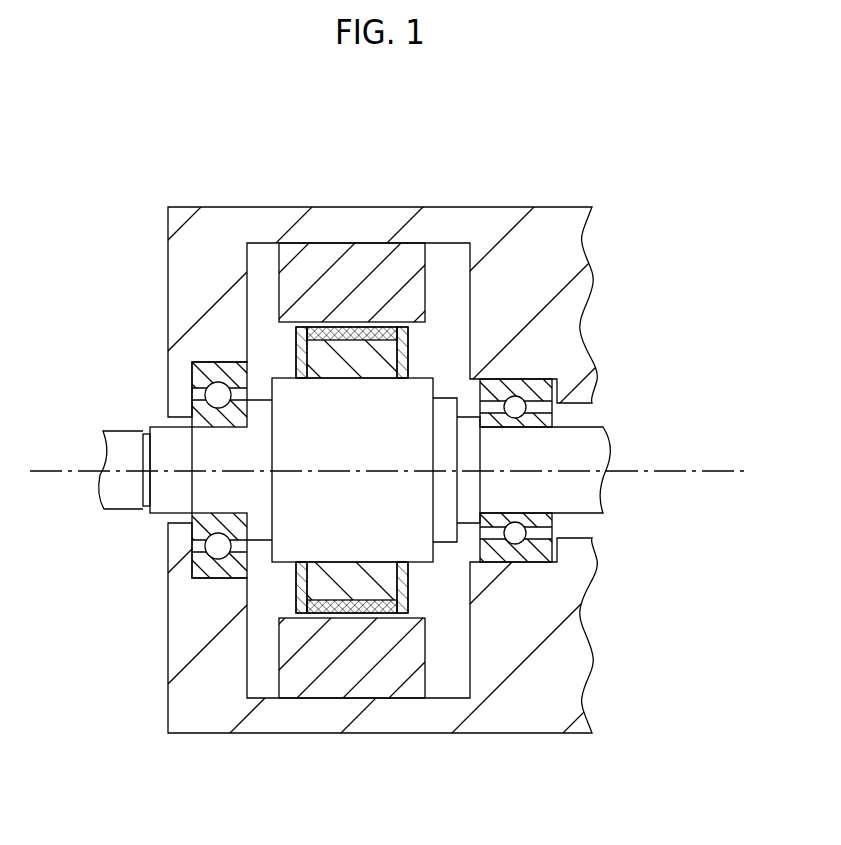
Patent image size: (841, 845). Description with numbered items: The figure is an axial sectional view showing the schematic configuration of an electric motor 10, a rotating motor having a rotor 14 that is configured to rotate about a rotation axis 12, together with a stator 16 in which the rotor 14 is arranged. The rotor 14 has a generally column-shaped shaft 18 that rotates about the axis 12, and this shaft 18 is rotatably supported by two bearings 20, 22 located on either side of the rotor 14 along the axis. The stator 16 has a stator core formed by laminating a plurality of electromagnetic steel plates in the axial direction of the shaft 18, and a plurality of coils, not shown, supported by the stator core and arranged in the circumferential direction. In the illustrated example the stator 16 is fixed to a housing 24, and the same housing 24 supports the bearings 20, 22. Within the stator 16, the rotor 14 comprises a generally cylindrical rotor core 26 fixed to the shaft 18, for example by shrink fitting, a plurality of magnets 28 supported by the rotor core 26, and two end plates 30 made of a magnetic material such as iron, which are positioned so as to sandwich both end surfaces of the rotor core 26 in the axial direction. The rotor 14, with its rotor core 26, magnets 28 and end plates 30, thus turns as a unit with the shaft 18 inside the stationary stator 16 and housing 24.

The electric motor 10 is at (549, 207).
The rotation axis 12 is at (663, 471).
The rotor 14 is at (273, 570).
The stator 16 is at (371, 265).
The shaft 18 is at (170, 442).
The bearing 20 is at (217, 363).
The bearing 22 is at (530, 378).
The housing 24 is at (563, 242).
The rotor core 26 is at (335, 593).
The magnet 28 is at (372, 592).
The end plate 30 is at (300, 597).